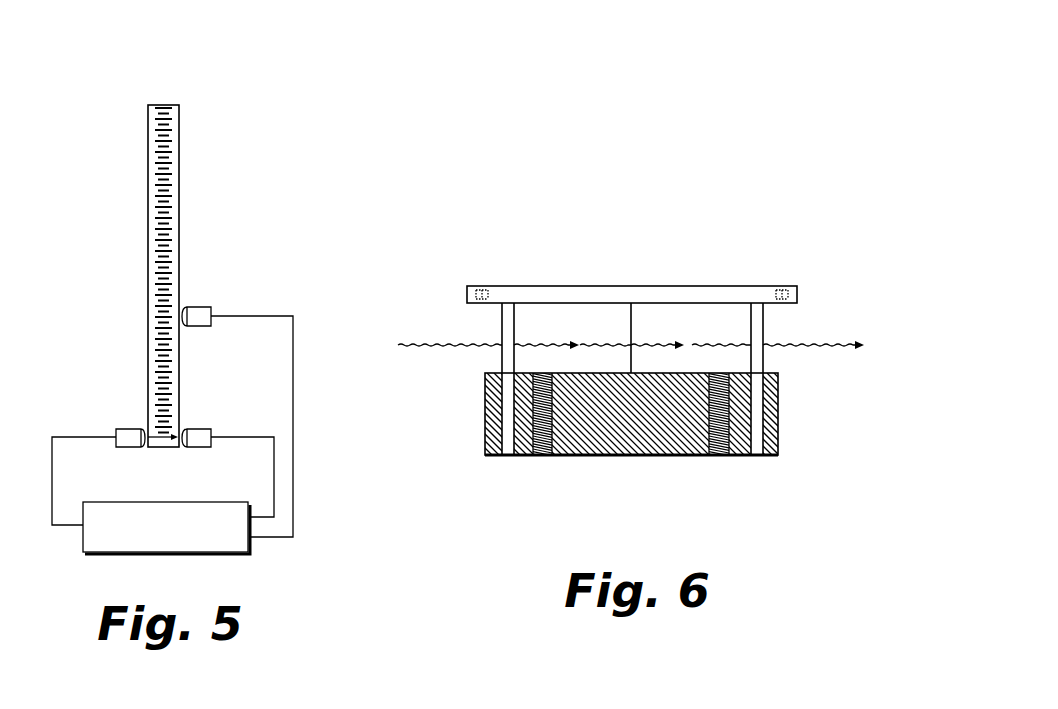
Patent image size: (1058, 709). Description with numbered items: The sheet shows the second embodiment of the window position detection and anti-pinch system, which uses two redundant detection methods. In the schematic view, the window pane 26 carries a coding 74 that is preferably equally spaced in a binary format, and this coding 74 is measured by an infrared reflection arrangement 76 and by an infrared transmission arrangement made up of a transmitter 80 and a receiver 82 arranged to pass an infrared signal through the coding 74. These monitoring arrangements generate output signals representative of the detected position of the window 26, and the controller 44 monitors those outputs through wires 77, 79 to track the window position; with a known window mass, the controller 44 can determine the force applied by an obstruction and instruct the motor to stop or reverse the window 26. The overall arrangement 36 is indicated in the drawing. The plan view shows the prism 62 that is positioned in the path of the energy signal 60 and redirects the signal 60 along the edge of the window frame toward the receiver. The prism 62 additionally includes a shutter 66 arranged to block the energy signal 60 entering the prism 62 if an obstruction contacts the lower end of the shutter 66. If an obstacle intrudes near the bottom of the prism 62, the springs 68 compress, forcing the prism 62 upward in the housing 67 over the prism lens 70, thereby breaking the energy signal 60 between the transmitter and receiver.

In FIG. 5, the window pane 26 is at (145, 134).
In FIG. 5, the position sensing assembly 36 is at (192, 126).
In FIG. 5, the coding 74 is at (149, 212).
In FIG. 5, the infrared reflection arrangement 76 is at (200, 307).
In FIG. 5, the wire 77 is at (268, 316).
In FIG. 5, the wire 79 is at (75, 437).
In FIG. 5, the transmitter 80 is at (128, 429).
In FIG. 5, the receiver 82 is at (200, 429).
In FIG. 5, the controller 44 is at (118, 552).
In FIG. 6, the signal 60 is at (432, 345).
In FIG. 6, the prism 62 is at (476, 493).
In FIG. 6, the shutter 66 is at (642, 427).
In FIG. 6, the housing 67 is at (568, 286).
In FIG. 6, the springs 68 is at (557, 428).
In FIG. 6, the prism lens 70 is at (660, 318).